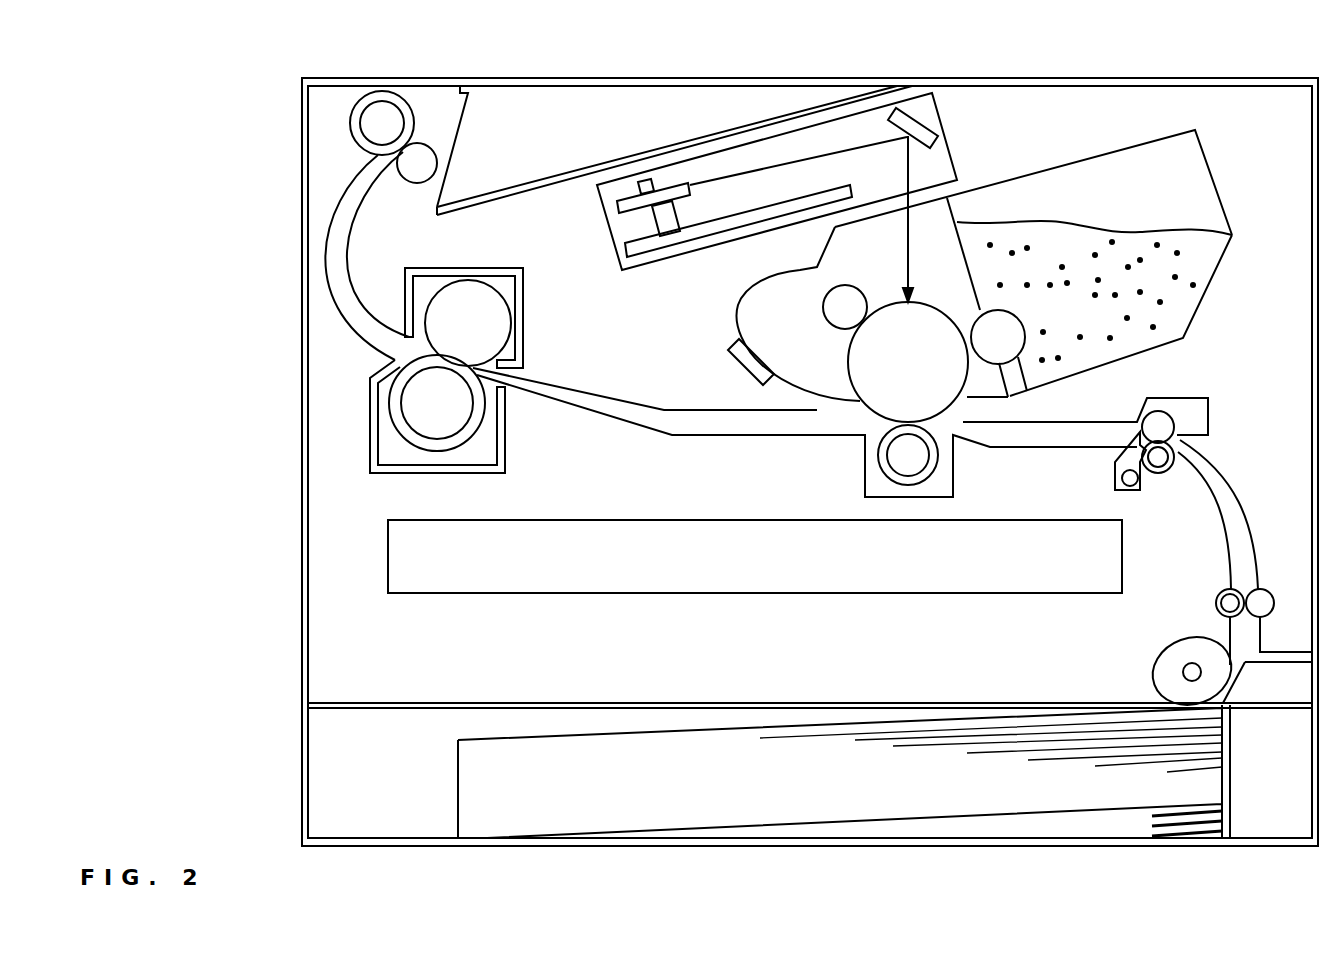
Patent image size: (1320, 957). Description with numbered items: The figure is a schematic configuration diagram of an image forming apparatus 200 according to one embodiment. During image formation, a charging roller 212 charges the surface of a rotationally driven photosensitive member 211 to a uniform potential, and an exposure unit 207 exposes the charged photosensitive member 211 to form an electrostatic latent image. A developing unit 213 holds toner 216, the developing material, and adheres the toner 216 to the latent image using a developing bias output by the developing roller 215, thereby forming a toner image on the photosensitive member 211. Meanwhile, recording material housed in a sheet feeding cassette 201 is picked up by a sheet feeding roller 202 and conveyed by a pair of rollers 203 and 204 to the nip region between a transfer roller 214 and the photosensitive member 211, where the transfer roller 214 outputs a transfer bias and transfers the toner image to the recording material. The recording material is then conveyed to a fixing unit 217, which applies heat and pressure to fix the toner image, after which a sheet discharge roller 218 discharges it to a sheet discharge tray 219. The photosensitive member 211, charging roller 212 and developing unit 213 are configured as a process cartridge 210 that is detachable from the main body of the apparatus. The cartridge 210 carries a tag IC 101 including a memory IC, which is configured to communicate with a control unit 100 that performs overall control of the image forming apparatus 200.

The image forming apparatus 200 is at (1236, 78).
The sheet feeding cassette 201 is at (502, 825).
The sheet feeding roller 202 is at (1152, 670).
The pair of rollers 203 is at (1214, 603).
The pair of rollers 204 is at (1180, 415).
The exposure unit 207 is at (945, 120).
The process cartridge 210 is at (1223, 189).
The photosensitive member 211 is at (937, 304).
The charging roller 212 is at (853, 284).
The developing unit 213 is at (1185, 340).
The transfer roller 214 is at (878, 458).
The developing roller 215 is at (1018, 388).
The toner 216 is at (1112, 228).
The fixing unit 217 is at (508, 447).
The sheet discharge roller 218 is at (350, 128).
The sheet discharge tray 219 is at (552, 182).
The control unit 100 is at (658, 520).
The tag IC 101 is at (728, 348).